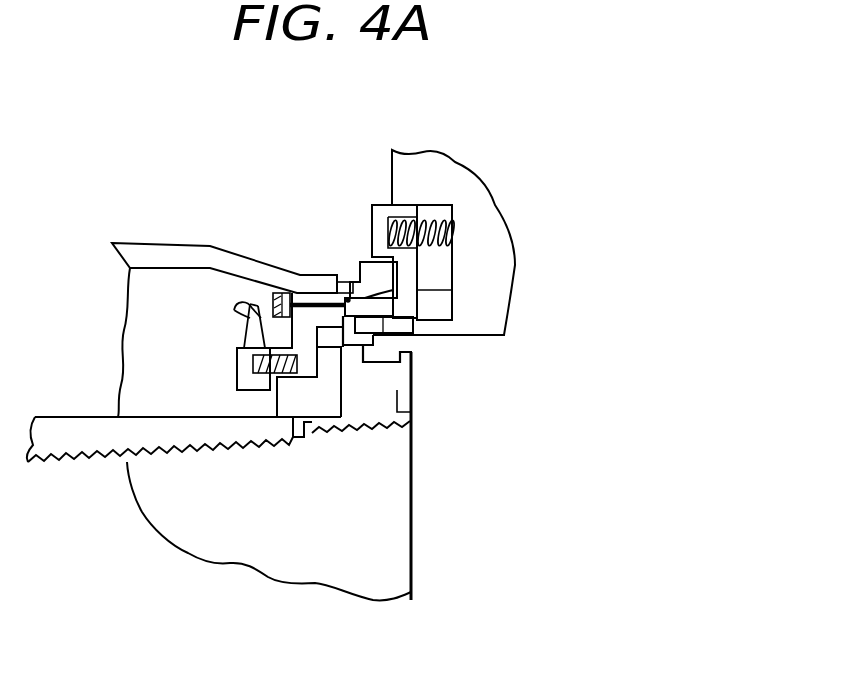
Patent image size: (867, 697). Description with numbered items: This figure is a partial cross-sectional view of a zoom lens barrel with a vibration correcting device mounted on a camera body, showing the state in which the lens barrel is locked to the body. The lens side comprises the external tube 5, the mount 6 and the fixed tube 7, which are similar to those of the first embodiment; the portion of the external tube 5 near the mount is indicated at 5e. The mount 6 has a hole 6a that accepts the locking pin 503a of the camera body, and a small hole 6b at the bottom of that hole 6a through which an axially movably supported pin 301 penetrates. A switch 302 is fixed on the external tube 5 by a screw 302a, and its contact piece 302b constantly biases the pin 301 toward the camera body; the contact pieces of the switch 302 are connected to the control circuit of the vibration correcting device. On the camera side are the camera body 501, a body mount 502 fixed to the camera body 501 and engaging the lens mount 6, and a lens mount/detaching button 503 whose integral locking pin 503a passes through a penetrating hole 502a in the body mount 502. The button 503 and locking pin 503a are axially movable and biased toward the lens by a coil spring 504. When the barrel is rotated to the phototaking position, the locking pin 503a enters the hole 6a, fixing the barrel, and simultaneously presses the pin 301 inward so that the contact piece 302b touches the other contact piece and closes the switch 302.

The external tube 5 is at (193, 243).
The engaging portion of cover 5e is at (297, 275).
The mount 6 is at (344, 280).
The hole 6a is at (352, 282).
The small hole 6b is at (323, 281).
The fixed tube 7 is at (187, 456).
The pin 301 is at (301, 297).
The switch 302 is at (237, 380).
The screw 302a is at (247, 355).
The contact piece 302b is at (240, 322).
The camera body 501 is at (435, 151).
The body mount 502 is at (410, 323).
The penetrating hole 502a is at (383, 288).
The lens mount/detaching button 503 is at (383, 204).
The locking pin 503a is at (350, 301).
The coil spring 504 is at (433, 248).